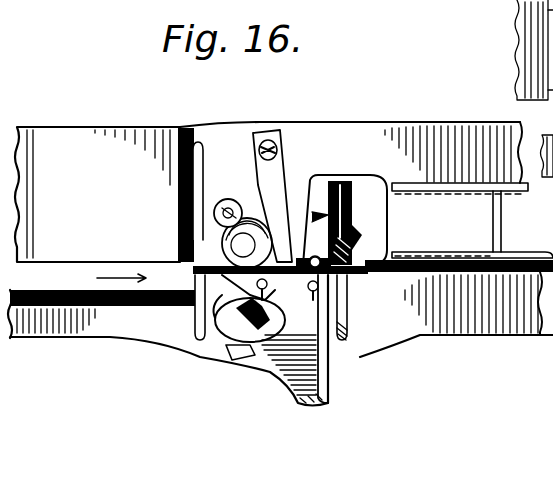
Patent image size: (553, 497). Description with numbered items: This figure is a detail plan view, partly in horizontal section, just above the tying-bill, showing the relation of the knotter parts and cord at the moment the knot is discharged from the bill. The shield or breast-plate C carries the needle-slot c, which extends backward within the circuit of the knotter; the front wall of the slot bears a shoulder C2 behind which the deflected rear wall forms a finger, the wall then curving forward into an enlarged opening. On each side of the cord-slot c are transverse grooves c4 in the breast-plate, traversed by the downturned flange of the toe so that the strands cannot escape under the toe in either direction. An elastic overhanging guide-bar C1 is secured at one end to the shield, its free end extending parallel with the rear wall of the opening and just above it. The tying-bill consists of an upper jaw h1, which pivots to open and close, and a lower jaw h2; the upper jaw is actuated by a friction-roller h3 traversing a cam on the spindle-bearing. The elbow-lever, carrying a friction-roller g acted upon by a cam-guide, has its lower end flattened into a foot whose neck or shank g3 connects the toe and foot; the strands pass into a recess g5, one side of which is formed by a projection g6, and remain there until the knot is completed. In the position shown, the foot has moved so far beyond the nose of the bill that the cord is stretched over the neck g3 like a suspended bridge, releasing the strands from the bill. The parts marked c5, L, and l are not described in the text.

The shield or breast-plate C is at (104, 194).
The elastic overhanging guide-bar C1 is at (272, 196).
The shoulder C2 is at (295, 339).
The needle-slot c is at (130, 278).
The transverse grooves c4 is at (198, 150).
The pin c5 is at (193, 318).
The friction-roller g is at (180, 225).
The neck or shank g3 is at (248, 289).
The recess g5 is at (249, 318).
The projection g6 is at (236, 353).
The upper jaw h1 is at (270, 292).
The lower jaw h2 is at (305, 290).
The friction-roller h3 is at (230, 200).
The rod L is at (345, 220).
The pin l is at (349, 307).